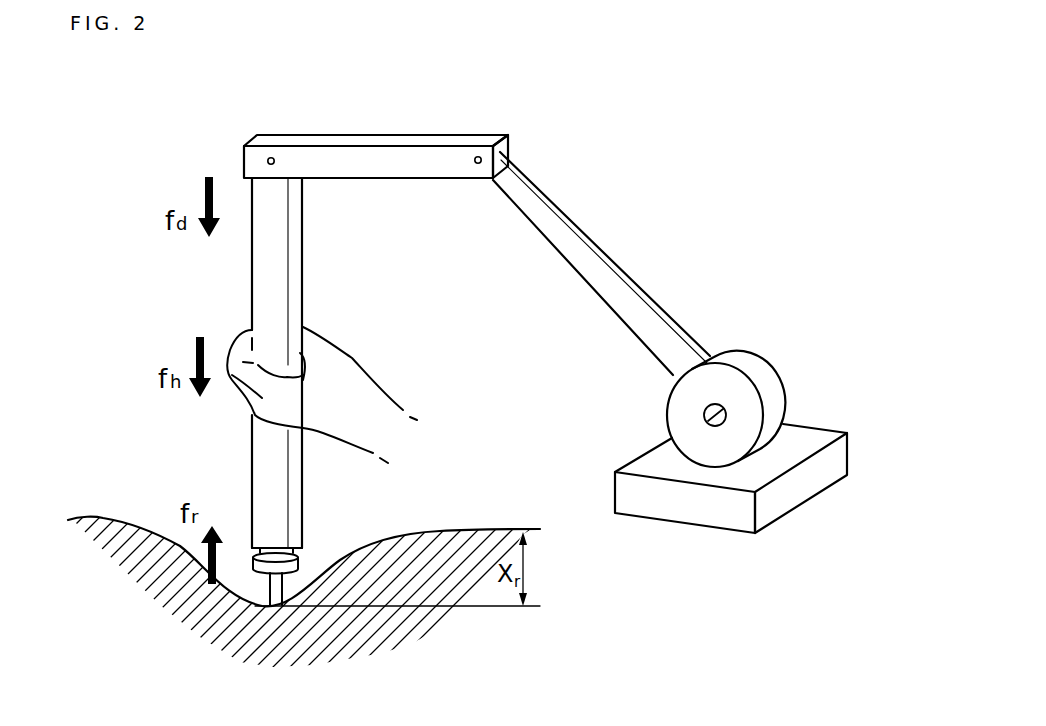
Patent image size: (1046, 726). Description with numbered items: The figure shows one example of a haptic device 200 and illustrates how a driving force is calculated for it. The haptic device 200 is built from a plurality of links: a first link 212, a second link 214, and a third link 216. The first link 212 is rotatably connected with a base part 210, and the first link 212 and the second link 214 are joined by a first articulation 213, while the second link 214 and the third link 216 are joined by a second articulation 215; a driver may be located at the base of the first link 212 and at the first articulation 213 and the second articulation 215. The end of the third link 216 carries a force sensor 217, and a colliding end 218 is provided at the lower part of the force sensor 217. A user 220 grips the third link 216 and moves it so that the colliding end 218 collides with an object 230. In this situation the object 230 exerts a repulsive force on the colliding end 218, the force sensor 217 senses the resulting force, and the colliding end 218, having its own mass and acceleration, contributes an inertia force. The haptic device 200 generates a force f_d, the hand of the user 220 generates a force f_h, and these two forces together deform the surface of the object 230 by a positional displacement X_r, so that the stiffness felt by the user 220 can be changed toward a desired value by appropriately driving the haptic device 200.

The haptic device 200 is at (613, 196).
The base part 210 is at (738, 358).
The first link 212 is at (650, 298).
The first articulation 213 is at (475, 164).
The second link 214 is at (380, 155).
The second articulation 215 is at (268, 159).
The third link 216 is at (258, 283).
The force sensor 217 is at (300, 565).
The colliding end 218 is at (275, 595).
The user 220 is at (347, 373).
The object 230 is at (110, 530).